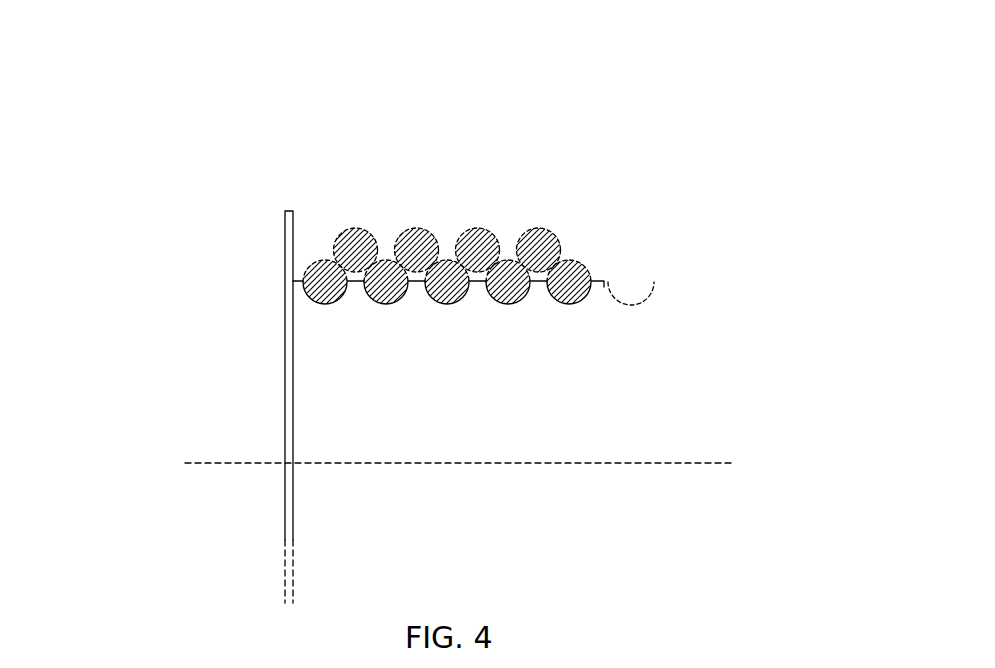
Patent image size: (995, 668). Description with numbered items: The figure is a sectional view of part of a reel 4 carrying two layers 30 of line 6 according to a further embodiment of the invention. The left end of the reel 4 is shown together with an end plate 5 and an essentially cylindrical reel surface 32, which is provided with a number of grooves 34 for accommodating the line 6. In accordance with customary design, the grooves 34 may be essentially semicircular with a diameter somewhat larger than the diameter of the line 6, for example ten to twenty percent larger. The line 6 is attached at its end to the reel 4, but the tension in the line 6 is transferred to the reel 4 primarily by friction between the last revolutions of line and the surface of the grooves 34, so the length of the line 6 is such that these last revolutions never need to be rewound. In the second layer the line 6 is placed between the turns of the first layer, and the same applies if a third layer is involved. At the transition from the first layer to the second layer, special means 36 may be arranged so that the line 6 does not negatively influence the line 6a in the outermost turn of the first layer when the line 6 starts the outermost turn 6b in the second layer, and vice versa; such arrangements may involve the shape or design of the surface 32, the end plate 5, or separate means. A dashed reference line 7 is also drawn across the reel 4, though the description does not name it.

The reel 4 is at (250, 350).
The end plate 5 is at (285, 235).
The line 6 is at (473, 228).
The outermost turn of the first layer 6a is at (310, 266).
The outermost turn in the second layer 6b is at (368, 232).
The reference line 7 is at (238, 463).
The layers of line 30 is at (597, 264).
The reel surface 32 is at (476, 285).
The grooves 34 is at (325, 303).
The special means 36 is at (316, 242).